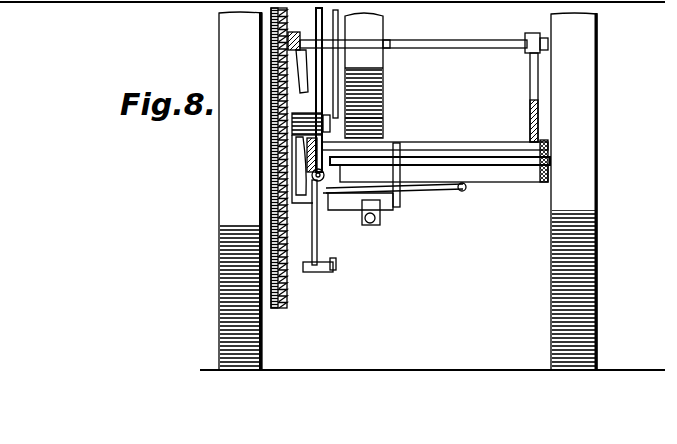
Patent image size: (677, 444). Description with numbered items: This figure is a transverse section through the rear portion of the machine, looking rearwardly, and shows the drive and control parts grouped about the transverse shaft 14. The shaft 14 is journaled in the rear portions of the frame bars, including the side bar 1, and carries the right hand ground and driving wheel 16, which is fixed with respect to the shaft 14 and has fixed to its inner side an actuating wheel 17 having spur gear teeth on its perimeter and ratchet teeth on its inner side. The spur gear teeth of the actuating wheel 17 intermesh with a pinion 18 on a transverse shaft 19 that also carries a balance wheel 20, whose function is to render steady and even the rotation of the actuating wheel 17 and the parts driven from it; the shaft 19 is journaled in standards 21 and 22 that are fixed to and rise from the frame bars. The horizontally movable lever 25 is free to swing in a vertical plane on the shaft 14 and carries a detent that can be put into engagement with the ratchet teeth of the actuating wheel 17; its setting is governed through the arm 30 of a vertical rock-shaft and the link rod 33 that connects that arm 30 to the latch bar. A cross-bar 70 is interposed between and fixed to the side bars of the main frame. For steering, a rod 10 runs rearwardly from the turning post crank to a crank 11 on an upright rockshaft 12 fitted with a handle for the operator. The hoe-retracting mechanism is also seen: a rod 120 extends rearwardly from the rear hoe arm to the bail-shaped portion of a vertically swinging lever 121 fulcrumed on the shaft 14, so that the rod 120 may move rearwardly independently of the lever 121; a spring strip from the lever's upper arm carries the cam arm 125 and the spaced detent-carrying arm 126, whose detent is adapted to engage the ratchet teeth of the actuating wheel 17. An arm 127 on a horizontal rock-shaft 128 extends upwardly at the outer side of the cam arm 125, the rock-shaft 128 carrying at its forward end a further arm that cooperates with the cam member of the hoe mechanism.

The side bar 1 is at (300, 148).
The rod 10 is at (336, 266).
The crank 11 is at (316, 272).
The upright rockshaft 12 is at (318, 246).
The transverse shaft 14 is at (525, 177).
The right hand ground and driving wheel 16 is at (228, 222).
The actuating wheel 17 is at (291, 193).
The pinion 18 is at (271, 38).
The transverse shaft 19 is at (420, 42).
The balance wheel 20 is at (385, 72).
The standard 21 is at (532, 79).
The standard 22 is at (298, 62).
The lever 25 is at (297, 170).
The arm 30 is at (432, 191).
The link rod 33 is at (465, 190).
The cross-bar 70 is at (455, 142).
The rod 120 is at (372, 226).
The vertically swinging lever 121 is at (388, 208).
The cam arm 125 is at (355, 119).
The detent-carrying arm 126 is at (297, 125).
The arm 127 is at (385, 93).
The horizontal rock-shaft 128 is at (322, 182).